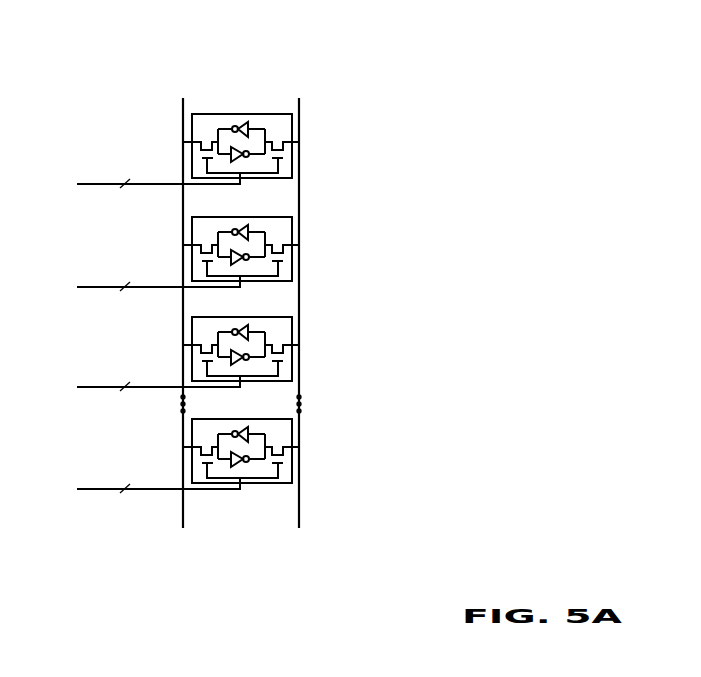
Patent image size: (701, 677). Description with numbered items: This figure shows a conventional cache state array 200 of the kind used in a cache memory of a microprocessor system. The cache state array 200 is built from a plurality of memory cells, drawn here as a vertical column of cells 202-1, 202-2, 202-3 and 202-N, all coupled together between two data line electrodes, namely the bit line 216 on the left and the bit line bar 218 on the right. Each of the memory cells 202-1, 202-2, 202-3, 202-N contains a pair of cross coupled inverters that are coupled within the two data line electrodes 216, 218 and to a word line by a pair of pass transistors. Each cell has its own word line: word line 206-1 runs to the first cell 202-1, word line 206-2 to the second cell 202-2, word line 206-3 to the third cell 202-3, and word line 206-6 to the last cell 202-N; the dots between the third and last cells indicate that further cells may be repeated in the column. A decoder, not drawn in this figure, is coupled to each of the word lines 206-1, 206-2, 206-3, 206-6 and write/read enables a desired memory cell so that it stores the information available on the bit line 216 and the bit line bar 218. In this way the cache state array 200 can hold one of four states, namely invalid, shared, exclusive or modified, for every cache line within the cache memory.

The cache state array 200 is at (76, 116).
The memory cell 202-1 is at (292, 123).
The memory cell 202-2 is at (292, 226).
The memory cell 202-3 is at (292, 326).
The memory cell 202-N is at (292, 428).
The word line 206-1 is at (158, 194).
The word line 206-2 is at (158, 297).
The word line 206-3 is at (158, 397).
The word line 206-6 is at (158, 499).
The bit line 216 is at (160, 560).
The bit line bar 218 is at (326, 560).